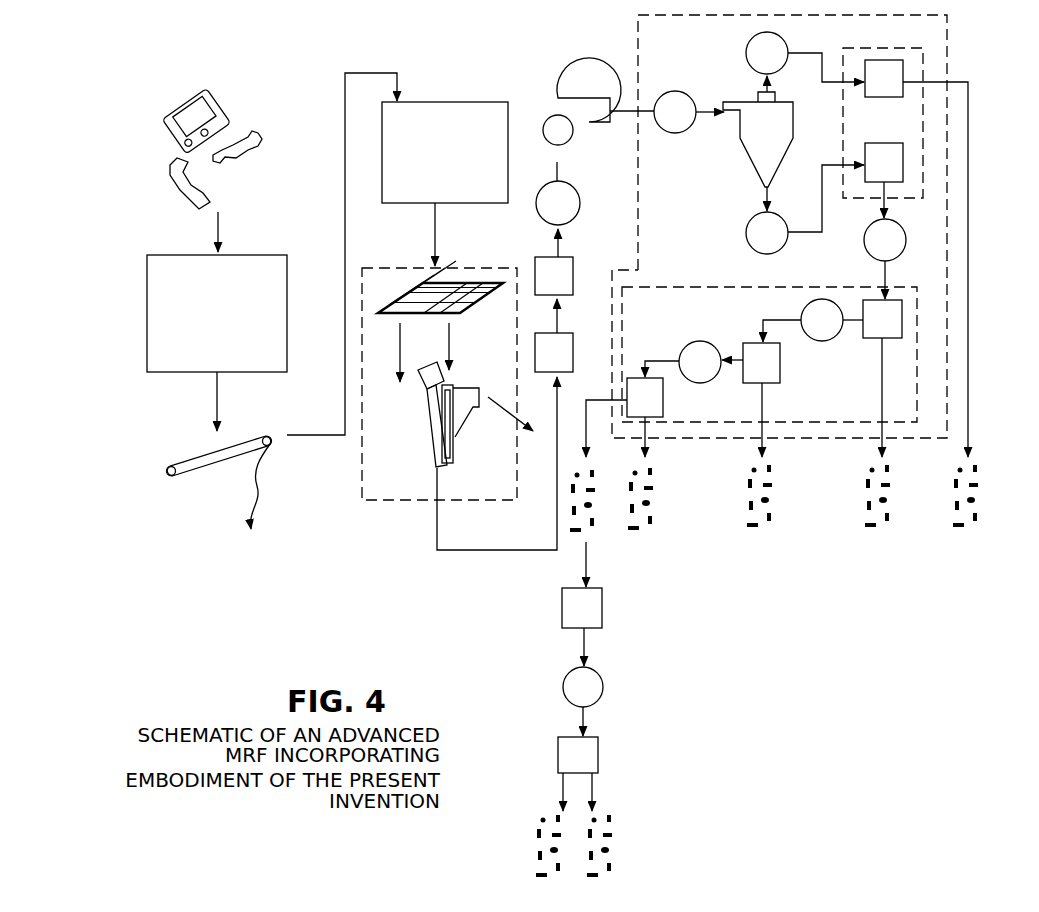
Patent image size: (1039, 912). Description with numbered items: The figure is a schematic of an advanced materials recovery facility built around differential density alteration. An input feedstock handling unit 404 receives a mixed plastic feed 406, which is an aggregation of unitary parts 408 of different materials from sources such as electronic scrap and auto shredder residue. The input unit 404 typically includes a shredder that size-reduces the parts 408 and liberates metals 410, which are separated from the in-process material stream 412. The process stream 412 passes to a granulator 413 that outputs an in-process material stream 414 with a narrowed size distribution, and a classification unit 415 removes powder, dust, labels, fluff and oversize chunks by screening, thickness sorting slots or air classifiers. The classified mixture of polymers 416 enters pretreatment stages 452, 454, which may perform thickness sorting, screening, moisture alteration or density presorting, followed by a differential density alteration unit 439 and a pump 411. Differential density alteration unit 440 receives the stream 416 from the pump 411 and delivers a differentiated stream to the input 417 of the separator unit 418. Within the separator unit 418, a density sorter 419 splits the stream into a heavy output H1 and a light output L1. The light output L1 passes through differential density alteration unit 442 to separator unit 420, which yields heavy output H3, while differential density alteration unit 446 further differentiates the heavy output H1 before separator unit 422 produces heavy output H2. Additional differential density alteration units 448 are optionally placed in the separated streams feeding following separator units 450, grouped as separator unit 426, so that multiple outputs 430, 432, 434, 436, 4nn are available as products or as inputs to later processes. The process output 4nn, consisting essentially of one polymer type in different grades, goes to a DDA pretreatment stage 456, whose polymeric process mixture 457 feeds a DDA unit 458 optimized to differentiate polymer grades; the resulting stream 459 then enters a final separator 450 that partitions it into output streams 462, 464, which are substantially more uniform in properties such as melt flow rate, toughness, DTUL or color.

The input feedstock handling unit 404 is at (208, 308).
The mixed plastic feed 406 is at (218, 226).
The unitary parts 408 is at (240, 160).
The metals 410 is at (256, 492).
The pump 411 is at (545, 100).
The in-process material stream 412 is at (215, 407).
The granulator 413 is at (428, 162).
The in-process material stream 414 is at (400, 357).
The classification unit 415 is at (379, 501).
The classified mixture of polymers 416 is at (568, 170).
The separator input 417 is at (705, 115).
The separator unit 418 is at (638, 54).
The density sorter 419 is at (760, 140).
The separator unit 420 is at (866, 95).
The separator unit 422 is at (908, 140).
The separator unit 426 is at (683, 286).
The output 430 is at (975, 500).
The output 432 is at (885, 500).
The output 434 is at (773, 500).
The output 436 is at (650, 505).
The process output 4nn is at (595, 525).
The differential density alteration unit 439 is at (566, 208).
The differential density alteration unit 440 is at (670, 100).
The differential density alteration unit 442 is at (752, 43).
The differential density alteration unit 446 is at (752, 229).
The differential density alteration unit 448 is at (870, 243).
The separator unit 450 is at (868, 326).
The pretreatment stage 452 is at (590, 326).
The pretreatment stage 454 is at (575, 262).
The DDA pretreatment stage 456 is at (568, 602).
The polymeric process mixture 457 is at (580, 643).
The DDA unit 458 is at (566, 684).
The line 459 is at (580, 715).
The output stream 462 is at (612, 836).
The output stream 464 is at (540, 832).
The light output L1 is at (802, 58).
The heavy output H1 is at (762, 192).
The heavy output H2 is at (889, 201).
The heavy output H3 is at (934, 82).